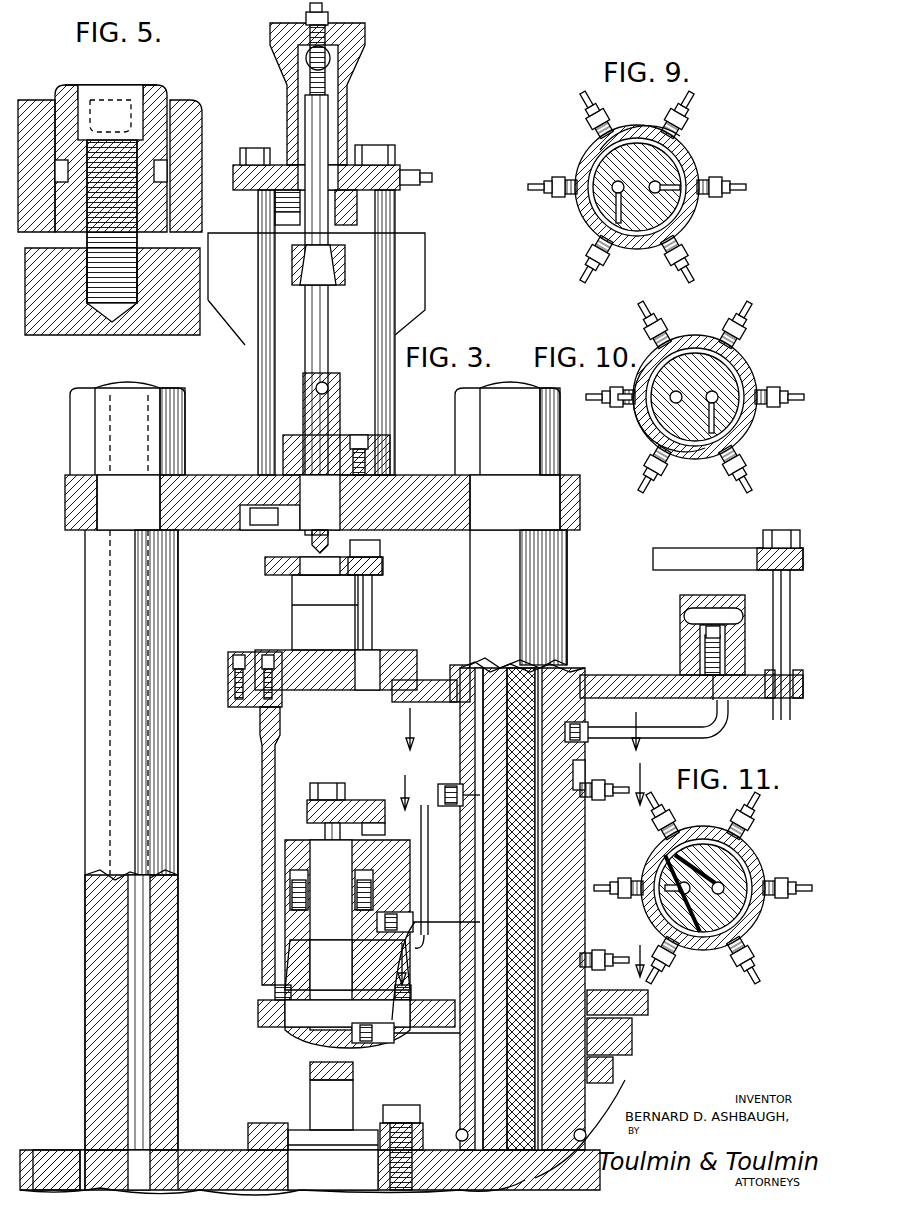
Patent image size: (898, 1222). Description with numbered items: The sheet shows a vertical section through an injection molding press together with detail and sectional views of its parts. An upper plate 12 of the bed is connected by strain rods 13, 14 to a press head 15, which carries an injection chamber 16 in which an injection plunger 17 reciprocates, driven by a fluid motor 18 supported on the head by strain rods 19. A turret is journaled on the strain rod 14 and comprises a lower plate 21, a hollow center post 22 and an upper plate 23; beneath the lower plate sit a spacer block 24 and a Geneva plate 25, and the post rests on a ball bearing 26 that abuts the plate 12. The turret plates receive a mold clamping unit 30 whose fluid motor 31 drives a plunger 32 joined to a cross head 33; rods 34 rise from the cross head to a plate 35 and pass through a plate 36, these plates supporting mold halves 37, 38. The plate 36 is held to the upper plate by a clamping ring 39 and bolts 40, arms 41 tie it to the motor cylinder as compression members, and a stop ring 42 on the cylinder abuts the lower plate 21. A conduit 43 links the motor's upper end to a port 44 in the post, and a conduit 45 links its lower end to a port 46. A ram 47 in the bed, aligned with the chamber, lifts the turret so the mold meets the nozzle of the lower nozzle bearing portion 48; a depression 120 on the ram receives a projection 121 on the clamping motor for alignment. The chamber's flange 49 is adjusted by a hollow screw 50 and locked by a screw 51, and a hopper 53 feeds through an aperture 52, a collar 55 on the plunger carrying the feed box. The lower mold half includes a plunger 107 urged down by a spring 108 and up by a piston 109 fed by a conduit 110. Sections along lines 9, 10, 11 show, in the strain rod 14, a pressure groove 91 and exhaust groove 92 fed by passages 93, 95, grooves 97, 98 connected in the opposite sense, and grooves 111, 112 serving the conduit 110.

In FIG. 3, the section line 9- 9 is at (522, 786).
In FIG. 3, the section line 10- 10 is at (515, 958).
In FIG. 3, the section line 11- 11 is at (512, 728).
In FIG. 3, the upper plate 12 is at (438, 1145).
In FIG. 3, the strain rod 13 is at (85, 618).
In FIG. 3, the strain rod 14 is at (548, 590).
In FIG. 5, the press head 15 is at (175, 330).
In FIG. 3, the press head 15 is at (65, 500).
In FIG. 3, the injection chamber 16 is at (340, 415).
In FIG. 3, the injection plunger 17 is at (331, 315).
In FIG. 3, the fluid motor 18 is at (345, 118).
In FIG. 3, the strain rod 19 is at (395, 303).
In FIG. 3, the lower plate 21 is at (258, 1010).
In FIG. 3, the center post 22 is at (585, 832).
In FIG. 3, the upper plate 23 is at (598, 675).
In FIG. 3, the spacer block 24 is at (632, 1036).
In FIG. 3, the Geneva plate 25 is at (613, 1068).
In FIG. 3, the ball bearing 26 is at (572, 1158).
In FIG. 3, the mold clamping unit 30 is at (285, 855).
In FIG. 3, the fluid motor 31 is at (290, 957).
In FIG. 3, the plunger 32 is at (325, 835).
In FIG. 3, the cross head 33 is at (307, 808).
In FIG. 3, the rods 34 is at (372, 613).
In FIG. 3, the plate 35 is at (383, 565).
In FIG. 3, the plate 36 is at (412, 668).
In FIG. 3, the mold half 37 is at (300, 598).
In FIG. 3, the mold half 38 is at (300, 630).
In FIG. 3, the clamping ring 39 is at (228, 675).
In FIG. 3, the bolts 40 is at (245, 655).
In FIG. 3, the arms 41 is at (262, 755).
In FIG. 3, the stop ring 42 is at (275, 990).
In FIG. 9, the conduit 43 is at (562, 195).
In FIG. 3, the conduit 43 is at (434, 893).
In FIG. 9, the port 44 is at (590, 140).
In FIG. 3, the port 44 is at (465, 790).
In FIG. 10, the conduit 45 is at (780, 398).
In FIG. 3, the conduit 45 is at (385, 1043).
In FIG. 10, the port 46 is at (640, 400).
In FIG. 3, the port 46 is at (410, 912).
In FIG. 3, the ram 47 is at (300, 1160).
In FIG. 3, the nozzle bearing portion 48 is at (300, 518).
In FIG. 5, the flange 49 is at (190, 118).
In FIG. 3, the flange 49 is at (385, 447).
In FIG. 5, the screw 50 is at (160, 95).
In FIG. 5, the screw 51 is at (135, 115).
In FIG. 3, the aperture 52 is at (328, 388).
In FIG. 3, the hopper 53 is at (425, 285).
In FIG. 3, the collar 55 is at (340, 270).
In FIG. 9, the groove 91 is at (683, 165).
In FIG. 3, the groove 91 is at (436, 870).
In FIG. 9, the groove 92 is at (653, 248).
In FIG. 9, the passage 93 is at (660, 182).
In FIG. 10, the passage 93 is at (718, 393).
In FIG. 11, the passage 93 is at (716, 880).
In FIG. 3, the passage 93 is at (540, 852).
In FIG. 9, the passage 95 is at (620, 181).
In FIG. 10, the passage 95 is at (680, 392).
In FIG. 11, the passage 95 is at (680, 893).
In FIG. 3, the passage 95 is at (500, 882).
In FIG. 10, the groove 97 is at (720, 370).
In FIG. 3, the groove 97 is at (575, 948).
In FIG. 10, the groove 98 is at (697, 455).
In FIG. 3, the plunger 107 is at (713, 610).
In FIG. 3, the spring 108 is at (722, 622).
In FIG. 3, the piston 109 is at (733, 698).
In FIG. 11, the conduit 110 is at (790, 895).
In FIG. 3, the conduit 110 is at (700, 738).
In FIG. 11, the groove 111 is at (735, 860).
In FIG. 11, the groove 112 is at (690, 945).
In FIG. 3, the groove 112 is at (475, 720).
In FIG. 3, the depression 120 is at (320, 1078).
In FIG. 3, the projection 121 is at (312, 1062).